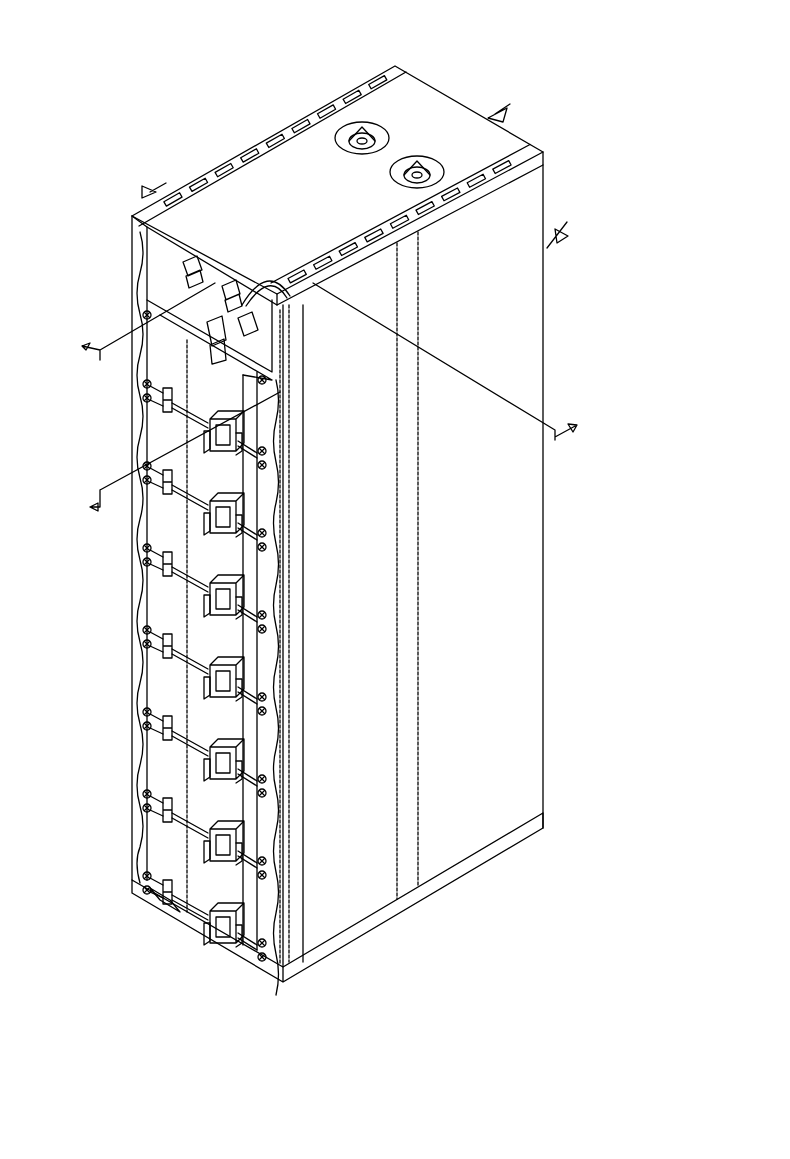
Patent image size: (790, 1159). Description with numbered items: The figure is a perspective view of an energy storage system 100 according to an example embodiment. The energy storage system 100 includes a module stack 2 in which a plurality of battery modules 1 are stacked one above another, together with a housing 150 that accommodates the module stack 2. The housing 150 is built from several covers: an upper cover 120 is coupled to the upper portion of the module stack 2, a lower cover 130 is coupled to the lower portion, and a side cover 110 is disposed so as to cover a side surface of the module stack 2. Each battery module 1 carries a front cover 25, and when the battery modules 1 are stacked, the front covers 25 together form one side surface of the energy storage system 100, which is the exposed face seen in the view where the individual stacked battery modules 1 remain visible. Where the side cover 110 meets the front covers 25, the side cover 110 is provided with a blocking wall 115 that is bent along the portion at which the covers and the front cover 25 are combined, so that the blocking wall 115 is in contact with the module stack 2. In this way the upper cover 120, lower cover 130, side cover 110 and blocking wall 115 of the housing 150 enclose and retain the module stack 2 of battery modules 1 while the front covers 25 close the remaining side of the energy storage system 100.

The energy storage system 100 is at (232, 37).
The housing 150 is at (633, 73).
The upper cover 120 is at (443, 122).
The side cover 110 is at (535, 347).
The lower cover 130 is at (518, 850).
The blocking wall 115 is at (293, 925).
The front cover 25 is at (150, 596).
The battery module 1 is at (210, 883).
The module stack 2 is at (162, 906).